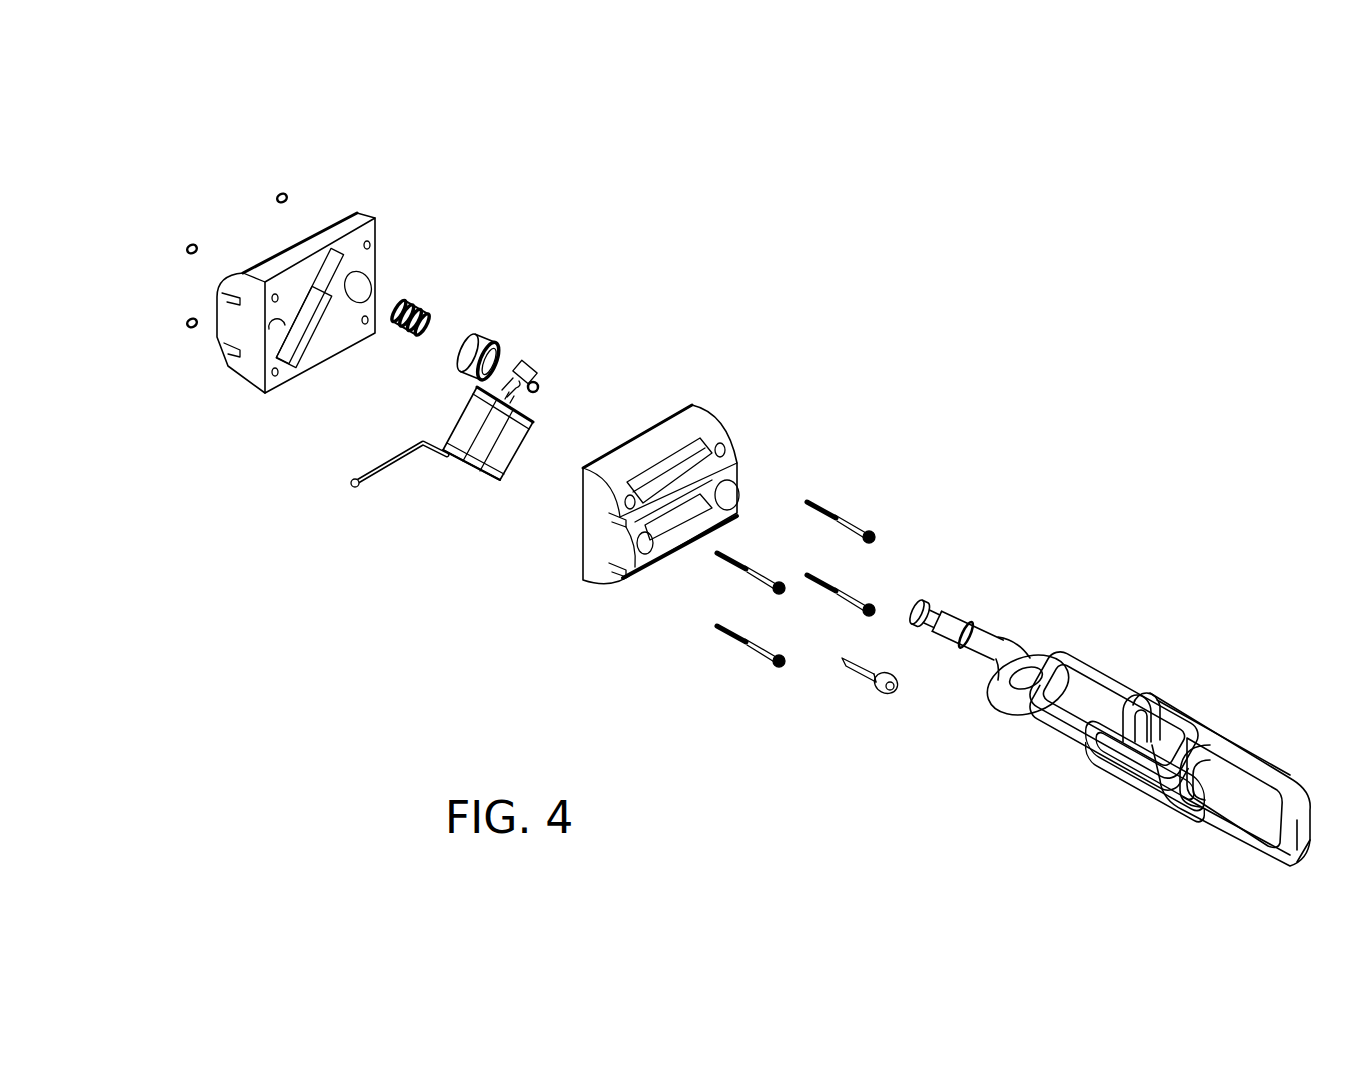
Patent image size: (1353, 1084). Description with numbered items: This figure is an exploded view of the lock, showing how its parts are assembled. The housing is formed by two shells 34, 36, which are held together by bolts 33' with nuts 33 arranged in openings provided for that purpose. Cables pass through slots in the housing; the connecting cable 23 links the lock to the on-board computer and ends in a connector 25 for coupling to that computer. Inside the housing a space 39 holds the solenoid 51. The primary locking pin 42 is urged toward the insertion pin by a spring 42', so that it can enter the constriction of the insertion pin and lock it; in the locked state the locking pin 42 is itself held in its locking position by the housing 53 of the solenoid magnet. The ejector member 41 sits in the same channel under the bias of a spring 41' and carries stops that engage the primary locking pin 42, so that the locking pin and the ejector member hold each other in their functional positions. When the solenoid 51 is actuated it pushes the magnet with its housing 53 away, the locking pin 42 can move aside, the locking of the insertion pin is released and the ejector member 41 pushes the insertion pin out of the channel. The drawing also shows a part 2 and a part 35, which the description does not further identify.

The chain assembly 2 is at (968, 596).
The connecting cable 23 is at (378, 468).
The connector 25 is at (355, 493).
The nuts 33 is at (882, 552).
The bolts 33' is at (440, 390).
The shell 34 is at (695, 404).
The cap screw 35 is at (860, 673).
The shell 36 is at (353, 223).
The space 39 is at (298, 343).
The ejector member 41 is at (499, 343).
The spring 41' is at (438, 295).
The primary locking pin 42 is at (562, 357).
The spring 42' is at (562, 405).
The solenoid 51 is at (489, 482).
The housing 53 is at (490, 402).